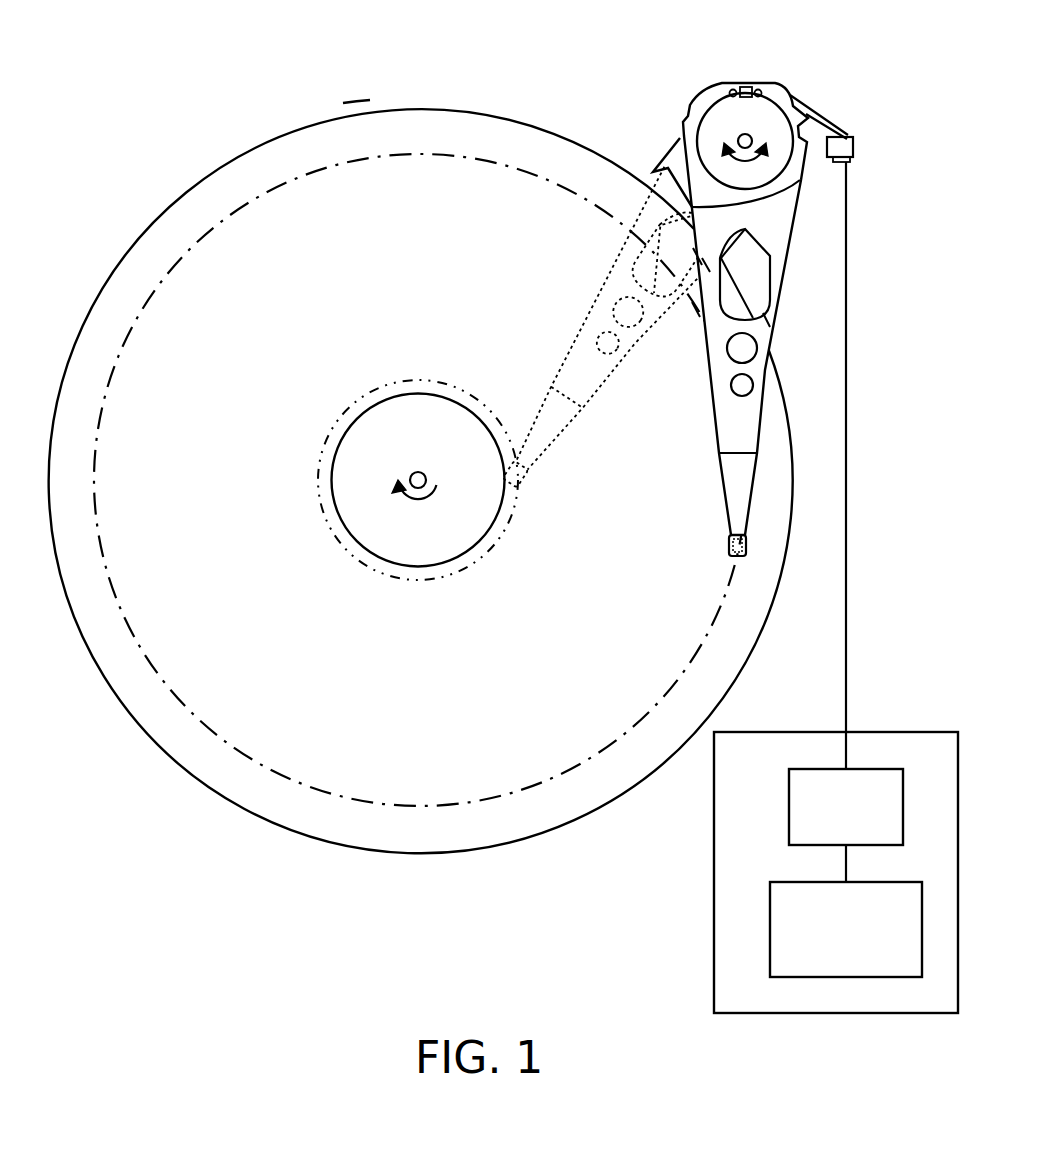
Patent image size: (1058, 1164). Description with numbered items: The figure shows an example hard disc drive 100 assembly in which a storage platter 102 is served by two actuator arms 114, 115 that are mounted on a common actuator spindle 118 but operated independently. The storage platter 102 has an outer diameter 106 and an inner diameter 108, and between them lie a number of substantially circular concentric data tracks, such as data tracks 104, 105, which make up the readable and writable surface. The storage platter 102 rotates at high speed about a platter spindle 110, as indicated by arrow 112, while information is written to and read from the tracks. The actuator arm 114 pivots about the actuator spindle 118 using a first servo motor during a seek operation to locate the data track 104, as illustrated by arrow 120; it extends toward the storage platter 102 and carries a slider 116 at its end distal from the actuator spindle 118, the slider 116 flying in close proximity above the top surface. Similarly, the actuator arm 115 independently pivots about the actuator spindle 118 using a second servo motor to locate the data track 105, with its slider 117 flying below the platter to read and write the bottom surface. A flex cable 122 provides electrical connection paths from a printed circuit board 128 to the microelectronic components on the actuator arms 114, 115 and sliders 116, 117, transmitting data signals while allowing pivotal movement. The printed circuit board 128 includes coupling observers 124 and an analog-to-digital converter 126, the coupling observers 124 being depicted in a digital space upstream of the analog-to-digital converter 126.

The hard disc drive 100 is at (163, 99).
The storage platter 102 is at (445, 732).
The data track 104 is at (641, 713).
The data track 105 is at (323, 456).
The outer diameter 106 is at (357, 112).
The inner diameter 108 is at (410, 393).
The platter spindle 110 is at (412, 474).
The arrow 112 is at (435, 492).
The actuator arm 114 is at (790, 226).
The actuator arm 115 is at (672, 147).
The slider 116 is at (730, 540).
The slider 117 is at (522, 477).
The actuator spindle 118 is at (740, 137).
The arrow 120 is at (765, 145).
The flex cable 122 is at (848, 505).
The coupling observers 124 is at (868, 972).
The analog-to-digital converter 126 is at (868, 836).
The printed circuit board 128 is at (767, 801).